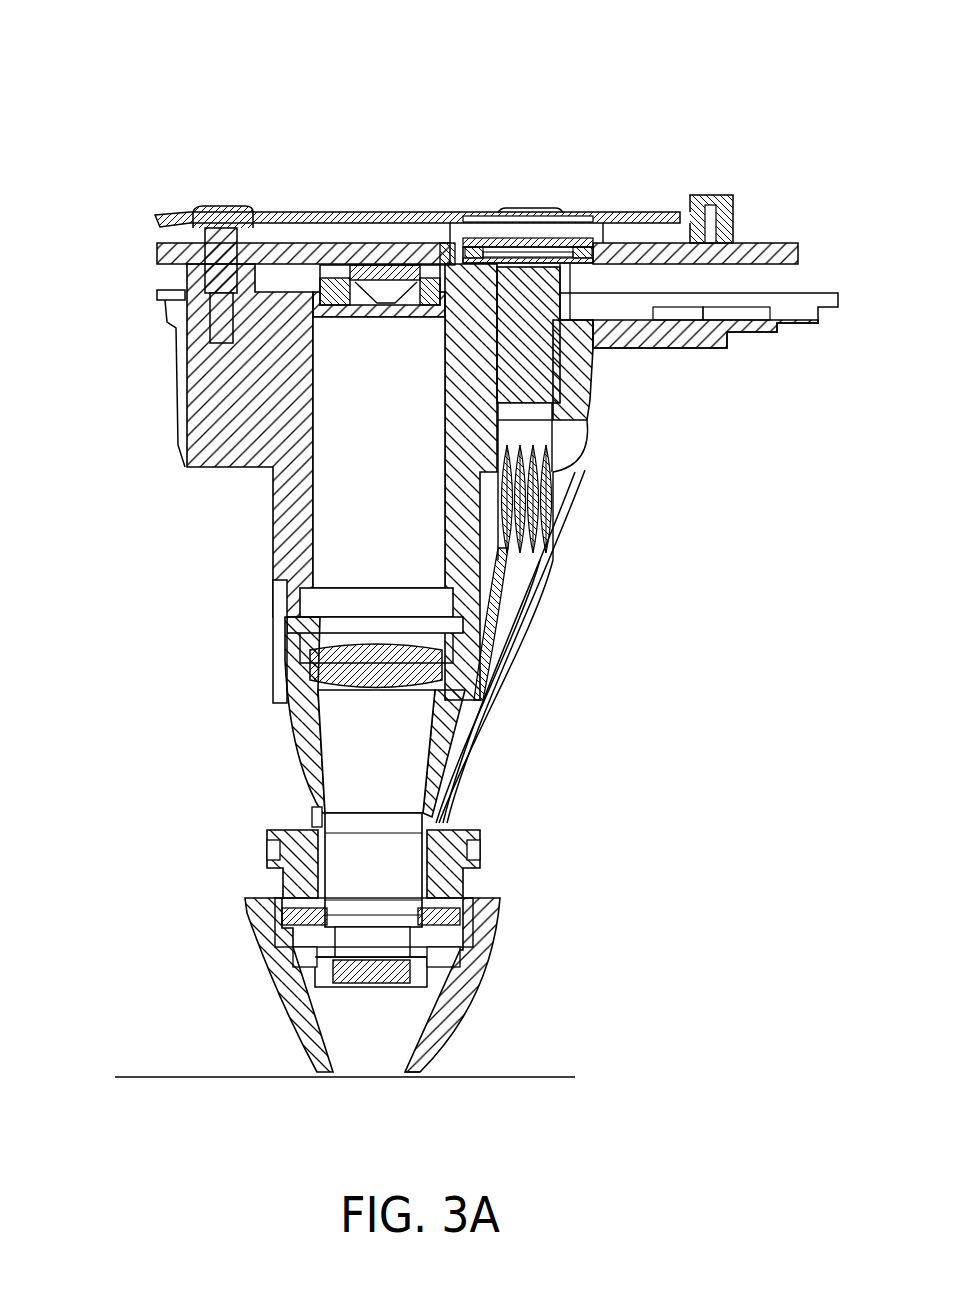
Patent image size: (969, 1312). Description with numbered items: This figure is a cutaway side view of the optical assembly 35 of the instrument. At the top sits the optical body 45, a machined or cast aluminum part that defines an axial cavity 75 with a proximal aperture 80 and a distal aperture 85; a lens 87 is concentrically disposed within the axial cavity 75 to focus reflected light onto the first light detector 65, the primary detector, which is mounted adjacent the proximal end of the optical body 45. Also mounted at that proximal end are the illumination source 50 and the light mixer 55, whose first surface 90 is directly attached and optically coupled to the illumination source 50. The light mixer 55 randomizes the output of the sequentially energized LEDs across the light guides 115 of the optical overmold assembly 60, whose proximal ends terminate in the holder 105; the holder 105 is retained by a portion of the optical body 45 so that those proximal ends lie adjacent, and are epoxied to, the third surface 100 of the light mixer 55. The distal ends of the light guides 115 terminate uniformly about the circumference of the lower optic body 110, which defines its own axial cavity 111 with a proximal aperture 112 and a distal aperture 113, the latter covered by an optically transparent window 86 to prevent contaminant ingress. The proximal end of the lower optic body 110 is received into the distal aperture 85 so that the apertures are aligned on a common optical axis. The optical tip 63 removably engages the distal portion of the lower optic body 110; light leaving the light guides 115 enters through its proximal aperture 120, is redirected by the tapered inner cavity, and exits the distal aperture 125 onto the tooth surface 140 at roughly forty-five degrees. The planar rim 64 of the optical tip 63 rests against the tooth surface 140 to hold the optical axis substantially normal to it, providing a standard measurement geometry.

The optical assembly 35 is at (95, 155).
The first light detector 65 is at (385, 297).
The illumination source 50 is at (493, 247).
The first surface 90 is at (523, 250).
The light mixer 55 is at (540, 290).
The proximal aperture 80 is at (385, 320).
The optical body 45 is at (255, 440).
The axial cavity 75 is at (358, 514).
The proximal aperture 112 is at (380, 630).
The lens 87 is at (380, 660).
The axial cavity 111 is at (365, 760).
The distal aperture 113 is at (370, 875).
The optically transparent window 86 is at (330, 925).
The distal aperture 85 is at (445, 724).
The tooth surface 140 is at (185, 1070).
The third surface 100 is at (545, 420).
The holder 105 is at (537, 498).
The optical overmold assembly 60 is at (507, 628).
The light guide 115 is at (512, 657).
The lower optic body 110 is at (485, 840).
The optical tip 63 is at (495, 920).
The distal aperture 125 is at (430, 1067).
The proximal aperture 120 is at (387, 987).
The rim 64 is at (410, 1077).